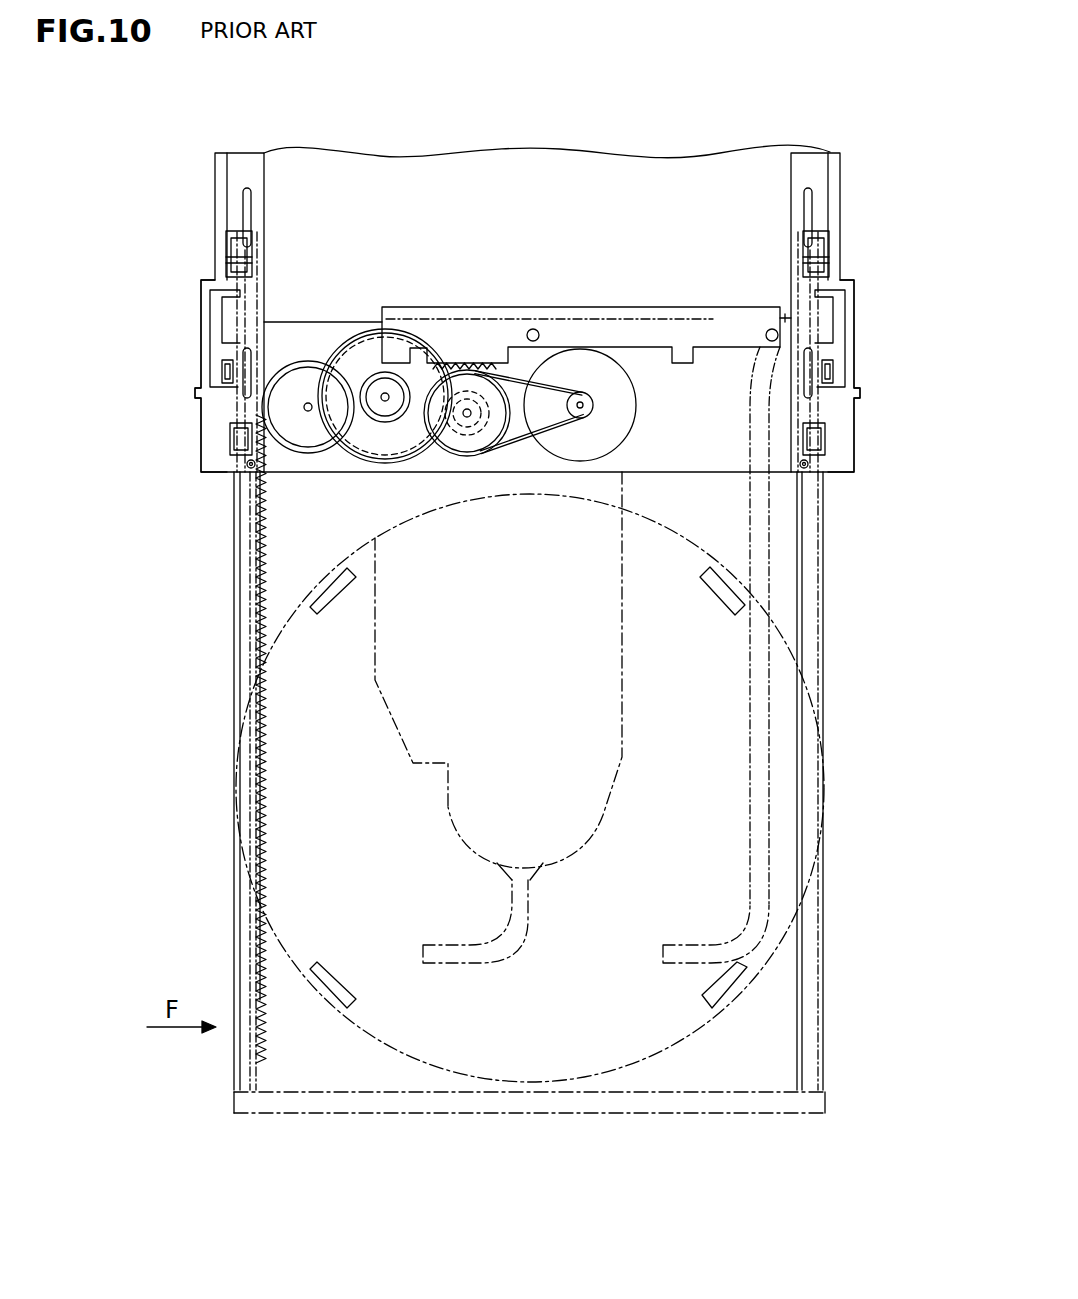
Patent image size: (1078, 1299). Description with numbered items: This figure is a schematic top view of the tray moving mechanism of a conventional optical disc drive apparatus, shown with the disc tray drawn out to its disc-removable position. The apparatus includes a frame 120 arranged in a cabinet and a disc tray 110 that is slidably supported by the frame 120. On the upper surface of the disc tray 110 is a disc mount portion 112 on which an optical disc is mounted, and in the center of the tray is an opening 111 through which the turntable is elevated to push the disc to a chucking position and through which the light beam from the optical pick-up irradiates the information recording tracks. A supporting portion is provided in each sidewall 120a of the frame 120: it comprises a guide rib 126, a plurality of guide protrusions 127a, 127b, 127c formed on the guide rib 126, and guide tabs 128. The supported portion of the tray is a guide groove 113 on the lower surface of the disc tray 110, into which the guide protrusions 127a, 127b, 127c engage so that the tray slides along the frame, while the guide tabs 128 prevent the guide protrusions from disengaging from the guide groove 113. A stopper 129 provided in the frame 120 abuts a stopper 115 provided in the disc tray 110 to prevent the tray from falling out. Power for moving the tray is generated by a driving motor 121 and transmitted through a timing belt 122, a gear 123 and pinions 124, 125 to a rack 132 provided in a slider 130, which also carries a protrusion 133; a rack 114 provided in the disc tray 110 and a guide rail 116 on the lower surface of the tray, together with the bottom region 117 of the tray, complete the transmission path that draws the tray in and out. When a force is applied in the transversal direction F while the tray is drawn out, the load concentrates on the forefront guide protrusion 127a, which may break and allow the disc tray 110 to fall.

The disc tray 110 is at (838, 556).
The opening 111 is at (553, 468).
The disc mount portion 112 is at (418, 806).
The guide groove 113 is at (245, 522).
The rack 114 is at (255, 597).
The stopper 115 is at (203, 300).
The guide rail 116 is at (525, 897).
The bottom plate 117 is at (687, 1094).
The frame 120 is at (851, 163).
The sidewall 120a is at (215, 205).
The driving motor 121 is at (583, 462).
The timing belt 122 is at (522, 455).
The gear 123 is at (462, 440).
The pinion 124 is at (385, 440).
The pinion 125 is at (330, 470).
The guide rib 126 is at (243, 177).
The guide protrusion 127a is at (250, 466).
The guide protrusion 127b is at (243, 375).
The guide protrusion 127c is at (247, 229).
The guide tab 128 is at (238, 273).
The stopper 129 is at (226, 323).
The slider 130 is at (440, 322).
The rack 132 is at (490, 364).
The protrusion 133 is at (533, 329).